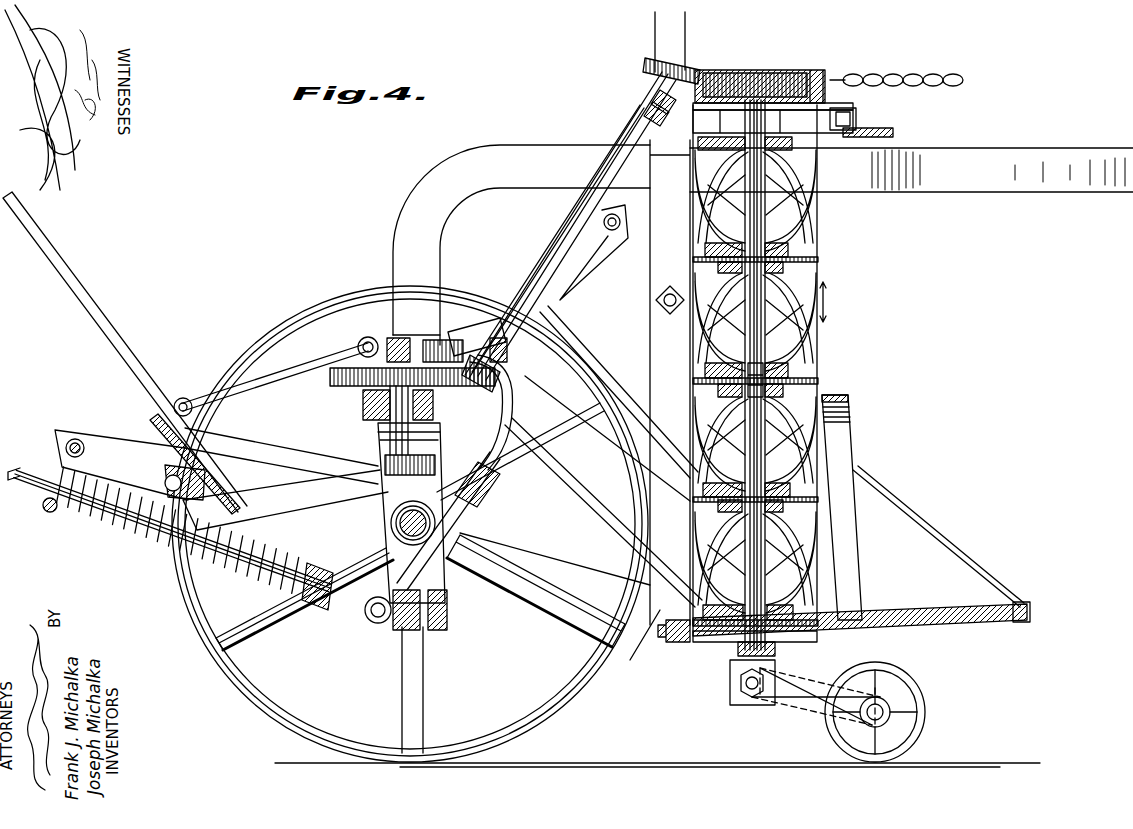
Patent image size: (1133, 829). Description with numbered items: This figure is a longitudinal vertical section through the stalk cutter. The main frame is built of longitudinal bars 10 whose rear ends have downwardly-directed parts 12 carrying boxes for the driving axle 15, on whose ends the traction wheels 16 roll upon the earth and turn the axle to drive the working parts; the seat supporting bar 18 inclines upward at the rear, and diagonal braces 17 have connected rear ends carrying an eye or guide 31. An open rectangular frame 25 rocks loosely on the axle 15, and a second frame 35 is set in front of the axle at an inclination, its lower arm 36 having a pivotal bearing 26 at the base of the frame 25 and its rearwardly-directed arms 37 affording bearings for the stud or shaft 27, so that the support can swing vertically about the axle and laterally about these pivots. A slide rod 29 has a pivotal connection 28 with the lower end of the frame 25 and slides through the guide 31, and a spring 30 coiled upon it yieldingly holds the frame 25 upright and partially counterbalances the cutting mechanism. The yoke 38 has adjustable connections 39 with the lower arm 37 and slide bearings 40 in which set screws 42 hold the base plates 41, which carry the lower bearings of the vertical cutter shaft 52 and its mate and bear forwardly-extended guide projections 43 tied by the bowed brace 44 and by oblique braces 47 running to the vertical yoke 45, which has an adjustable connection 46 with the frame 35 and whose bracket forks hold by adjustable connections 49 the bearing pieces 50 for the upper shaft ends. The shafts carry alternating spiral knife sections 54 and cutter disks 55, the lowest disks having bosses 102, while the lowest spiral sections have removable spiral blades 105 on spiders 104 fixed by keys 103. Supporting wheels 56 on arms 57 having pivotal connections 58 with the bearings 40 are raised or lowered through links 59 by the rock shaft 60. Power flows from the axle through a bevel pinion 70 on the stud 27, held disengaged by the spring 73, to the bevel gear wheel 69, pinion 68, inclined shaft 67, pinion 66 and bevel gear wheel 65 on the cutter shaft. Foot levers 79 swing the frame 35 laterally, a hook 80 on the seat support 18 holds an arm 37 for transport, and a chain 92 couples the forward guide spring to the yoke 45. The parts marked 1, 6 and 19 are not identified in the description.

The auger blade arm 1 is at (778, 285).
The auger blade brace 6 is at (686, 312).
The longitudinal bars 10 is at (935, 190).
The downwardly-directed parts 12 is at (392, 243).
The driving axle 15 is at (400, 535).
The traction wheels 16 is at (428, 700).
The diagonal braces 17 is at (285, 504).
The seat supporting bar 18 is at (100, 305).
The lever bracket bar 19 is at (145, 468).
The open frame 25 is at (385, 450).
The pivotal bearing 26 is at (448, 608).
The shaft or stud 27 is at (362, 405).
The pivotal connection 28 is at (365, 620).
The slide rod 29 is at (22, 472).
The spring 30 is at (128, 548).
The eye or guide 31 is at (43, 506).
The frame 35 is at (567, 222).
The lower arm 36 is at (475, 518).
The rearwardly-directed arms 37 is at (420, 330).
The yoke 38 is at (600, 520).
The adjustable connections 39 is at (502, 412).
The slide bearings 40 is at (645, 650).
The base plates 41 is at (710, 645).
The set screws 42 is at (665, 638).
The guide projections 43 is at (960, 625).
The tie bar or brace 44 is at (850, 394).
The vertical yoke 45 is at (670, 382).
The adjustable connection 46 is at (895, 132).
The braces 47 is at (925, 512).
The adjustable connections 49 is at (857, 118).
The bearing pieces 50 is at (790, 130).
The cutter shaft 52 is at (790, 218).
The spiral knife sections 54 is at (800, 230).
The cutter disks 55 is at (693, 264).
The supporting wheels or rollers 56 is at (926, 708).
The arms 57 is at (800, 700).
The pivotal connection 58 is at (735, 705).
The links 59 is at (632, 428).
The rock shaft 60 is at (614, 232).
The bevel gear wheel 65 is at (780, 72).
The bevel gear pinion 66 is at (652, 58).
The shaft 67 is at (625, 130).
The bevel gear pinion 68 is at (506, 380).
The bevel gear wheel 69 is at (345, 360).
The bevel pinion 70 is at (436, 462).
The spring 73 is at (411, 513).
The foot levers 79 is at (290, 470).
The hook 80 is at (260, 372).
The chain 92 is at (924, 74).
The bosses 102 is at (745, 658).
The keys 103 is at (745, 390).
The spiders 104 is at (715, 240).
The spiral blades 105 is at (692, 432).